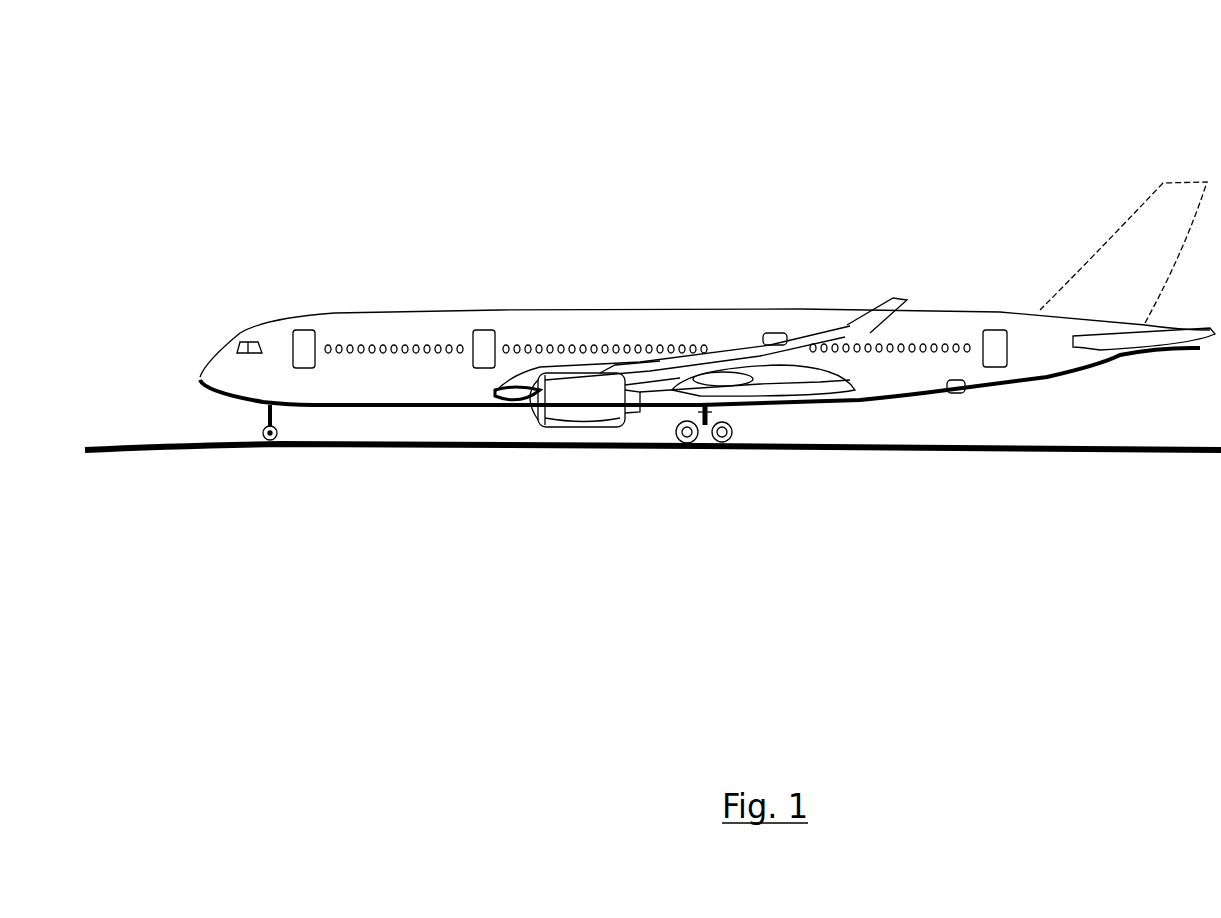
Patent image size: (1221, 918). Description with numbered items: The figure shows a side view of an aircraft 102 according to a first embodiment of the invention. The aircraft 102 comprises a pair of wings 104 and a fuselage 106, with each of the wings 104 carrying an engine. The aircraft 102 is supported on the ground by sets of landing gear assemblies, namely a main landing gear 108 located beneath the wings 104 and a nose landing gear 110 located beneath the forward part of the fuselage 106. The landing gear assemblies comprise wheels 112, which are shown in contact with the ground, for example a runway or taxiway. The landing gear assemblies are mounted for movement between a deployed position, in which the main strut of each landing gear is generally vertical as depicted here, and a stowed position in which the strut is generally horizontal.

The aircraft 102 is at (710, 143).
The wings 104 is at (860, 325).
The fuselage 106 is at (335, 338).
The main landing gear 108 is at (723, 430).
The nose landing gear 110 is at (265, 447).
The wheels 112 is at (280, 433).